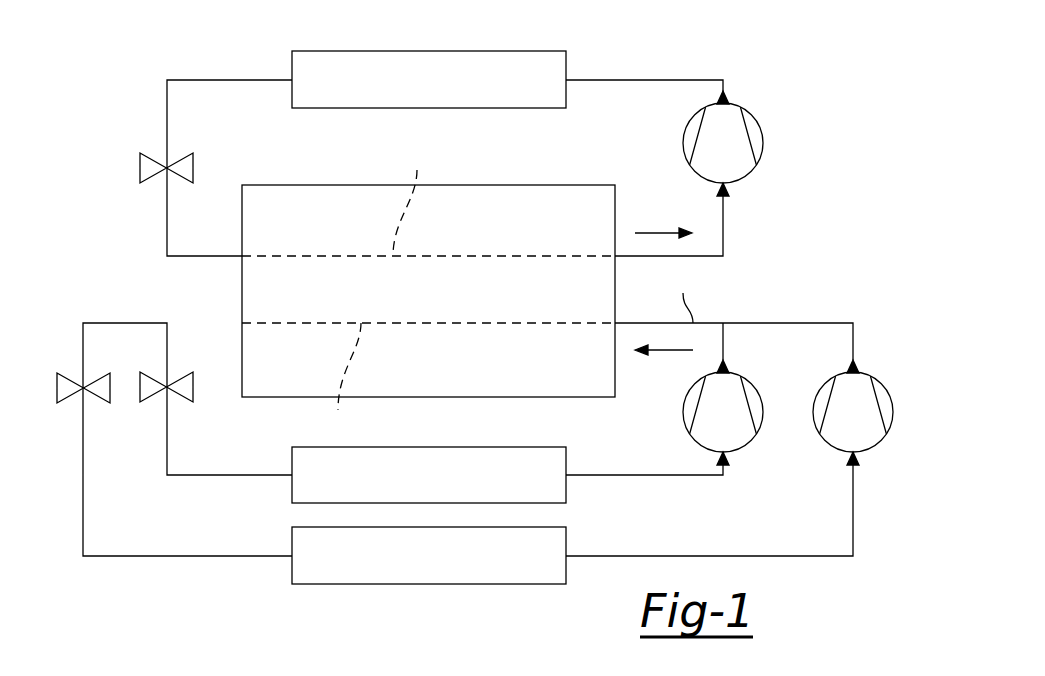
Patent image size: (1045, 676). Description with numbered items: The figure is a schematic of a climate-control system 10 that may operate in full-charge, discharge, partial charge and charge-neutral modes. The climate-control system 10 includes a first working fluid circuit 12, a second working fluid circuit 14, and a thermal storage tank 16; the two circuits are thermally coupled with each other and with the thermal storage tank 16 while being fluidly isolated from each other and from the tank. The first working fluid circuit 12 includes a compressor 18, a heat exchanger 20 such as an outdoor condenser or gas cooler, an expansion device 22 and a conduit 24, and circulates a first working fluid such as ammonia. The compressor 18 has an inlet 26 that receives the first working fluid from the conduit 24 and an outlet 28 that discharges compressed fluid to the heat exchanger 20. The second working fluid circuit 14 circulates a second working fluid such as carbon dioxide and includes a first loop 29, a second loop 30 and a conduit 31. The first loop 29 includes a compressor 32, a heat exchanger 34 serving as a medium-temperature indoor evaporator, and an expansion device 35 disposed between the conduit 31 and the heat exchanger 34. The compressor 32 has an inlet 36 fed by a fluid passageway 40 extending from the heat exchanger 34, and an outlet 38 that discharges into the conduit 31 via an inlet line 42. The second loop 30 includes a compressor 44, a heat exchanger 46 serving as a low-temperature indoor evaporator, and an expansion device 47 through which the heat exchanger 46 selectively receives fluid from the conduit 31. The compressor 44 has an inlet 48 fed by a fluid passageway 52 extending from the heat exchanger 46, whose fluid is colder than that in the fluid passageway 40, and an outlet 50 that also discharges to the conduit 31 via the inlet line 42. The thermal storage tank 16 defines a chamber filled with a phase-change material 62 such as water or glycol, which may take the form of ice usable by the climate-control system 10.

The climate-control system 10 is at (848, 95).
The first working fluid circuit 12 is at (686, 63).
The second working fluid circuit 14 is at (831, 303).
The thermal storage tank 16 is at (228, 285).
The compressor 18 is at (763, 152).
The heat exchanger 20 is at (566, 64).
The expansion device 22 is at (152, 163).
The conduit 24 is at (411, 198).
The inlet 26 is at (730, 190).
The outlet 28 is at (740, 100).
The first loop 29 is at (699, 494).
The second loop 30 is at (786, 567).
The conduit 31 is at (339, 382).
The compressor 32 is at (688, 430).
The heat exchanger 34 is at (292, 487).
The expansion device 35 is at (178, 392).
The inlet 36 is at (735, 460).
The outlet 38 is at (735, 372).
The fluid passageway 40 is at (651, 482).
The inlet line 42 is at (683, 293).
The compressor 44 is at (893, 430).
The heat exchanger 46 is at (292, 567).
The expansion device 47 is at (75, 385).
The inlet 48 is at (865, 460).
The outlet 50 is at (863, 372).
The fluid passageway 52 is at (859, 540).
The phase-change material 62 is at (582, 385).